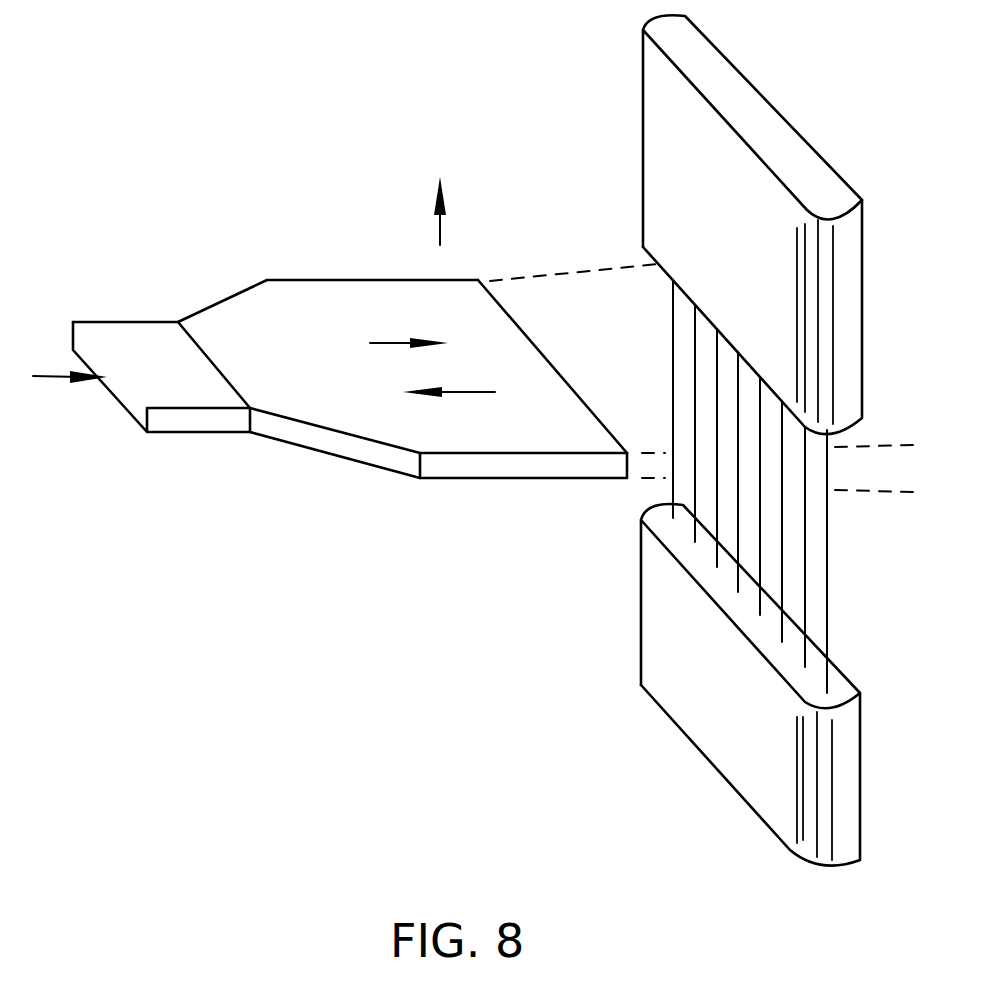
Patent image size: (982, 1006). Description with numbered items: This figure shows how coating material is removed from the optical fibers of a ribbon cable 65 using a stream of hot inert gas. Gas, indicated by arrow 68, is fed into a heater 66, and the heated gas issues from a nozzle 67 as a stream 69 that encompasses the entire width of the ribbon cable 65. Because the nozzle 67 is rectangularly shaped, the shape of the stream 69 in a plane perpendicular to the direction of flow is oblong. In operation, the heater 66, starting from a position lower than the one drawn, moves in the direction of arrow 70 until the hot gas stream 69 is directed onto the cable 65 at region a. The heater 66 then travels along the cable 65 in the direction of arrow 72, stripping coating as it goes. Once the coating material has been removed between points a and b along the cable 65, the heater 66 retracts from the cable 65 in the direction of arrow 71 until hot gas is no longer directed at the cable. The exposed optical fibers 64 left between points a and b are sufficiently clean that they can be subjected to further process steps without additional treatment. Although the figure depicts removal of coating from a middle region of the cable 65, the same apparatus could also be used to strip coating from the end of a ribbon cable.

The exposed optical fibers 64 is at (807, 573).
The ribbon cable 65 is at (660, 667).
The heater 66 is at (247, 302).
The nozzle 67 is at (512, 315).
The arrow indicating gas fed to heater 68 is at (67, 391).
The gas stream 69 is at (641, 375).
The arrow indicating heater approach direction 70 is at (403, 340).
The arrow indicating heater retraction direction 71 is at (457, 392).
The arrow indicating heater travel direction along cable 72 is at (438, 235).
The region a is at (677, 565).
The point b is at (663, 273).